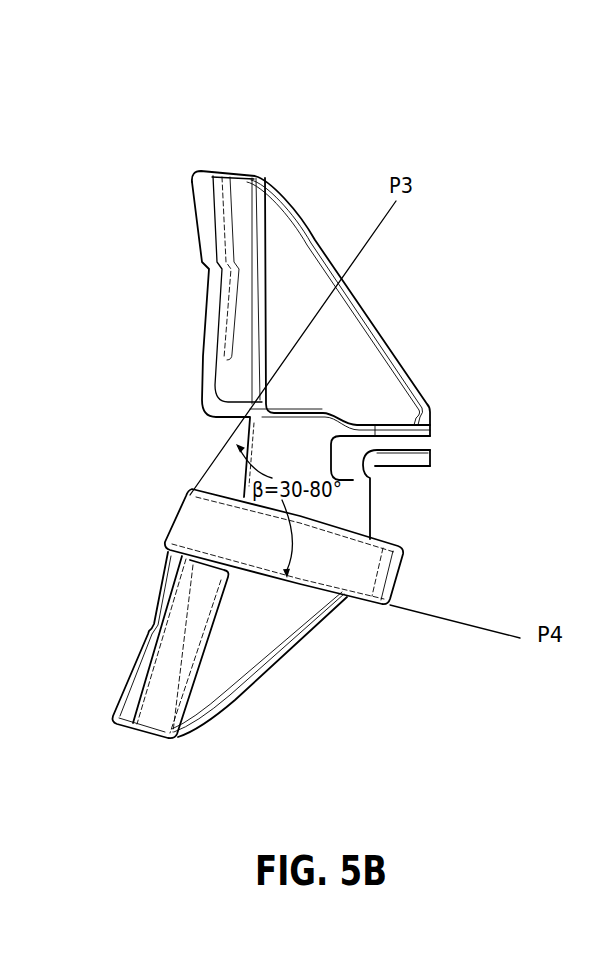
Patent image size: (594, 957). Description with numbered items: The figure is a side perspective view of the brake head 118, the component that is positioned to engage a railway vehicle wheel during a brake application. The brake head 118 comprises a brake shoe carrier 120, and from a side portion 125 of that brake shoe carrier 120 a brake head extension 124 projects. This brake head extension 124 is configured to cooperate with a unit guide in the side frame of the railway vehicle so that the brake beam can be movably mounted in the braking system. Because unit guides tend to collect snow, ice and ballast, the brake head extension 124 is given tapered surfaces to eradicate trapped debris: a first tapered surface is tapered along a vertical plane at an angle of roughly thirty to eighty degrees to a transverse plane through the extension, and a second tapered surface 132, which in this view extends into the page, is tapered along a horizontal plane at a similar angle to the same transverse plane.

The brake head 118 is at (295, 394).
The brake shoe carrier 120 is at (208, 248).
The brake head extension 124 is at (350, 578).
The side portion 125 is at (307, 430).
The second tapered surface 132 is at (170, 547).